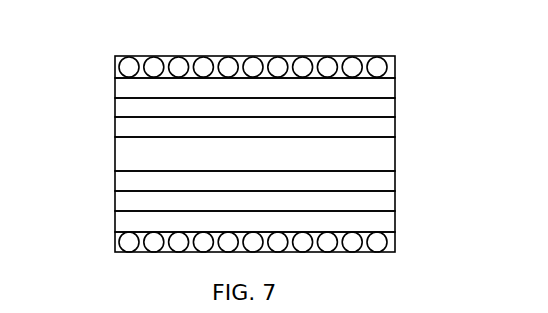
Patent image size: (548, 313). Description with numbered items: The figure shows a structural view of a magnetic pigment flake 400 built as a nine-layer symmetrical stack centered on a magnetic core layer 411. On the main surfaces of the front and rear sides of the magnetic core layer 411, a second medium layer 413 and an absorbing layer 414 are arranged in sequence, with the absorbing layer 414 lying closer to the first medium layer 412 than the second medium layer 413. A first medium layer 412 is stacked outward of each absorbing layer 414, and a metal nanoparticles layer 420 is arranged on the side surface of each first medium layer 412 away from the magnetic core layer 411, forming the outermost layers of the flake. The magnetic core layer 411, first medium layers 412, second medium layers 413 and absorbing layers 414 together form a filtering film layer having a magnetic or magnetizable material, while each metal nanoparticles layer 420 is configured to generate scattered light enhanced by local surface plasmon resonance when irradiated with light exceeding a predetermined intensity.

The magnetic pigment flake 400 is at (243, 133).
The magnetic core layer 411 is at (392, 156).
The first medium layer 412 is at (392, 88).
The second medium layer 413 is at (392, 132).
The absorbing layer 414 is at (392, 107).
The metal nanoparticles layer 420 is at (392, 61).